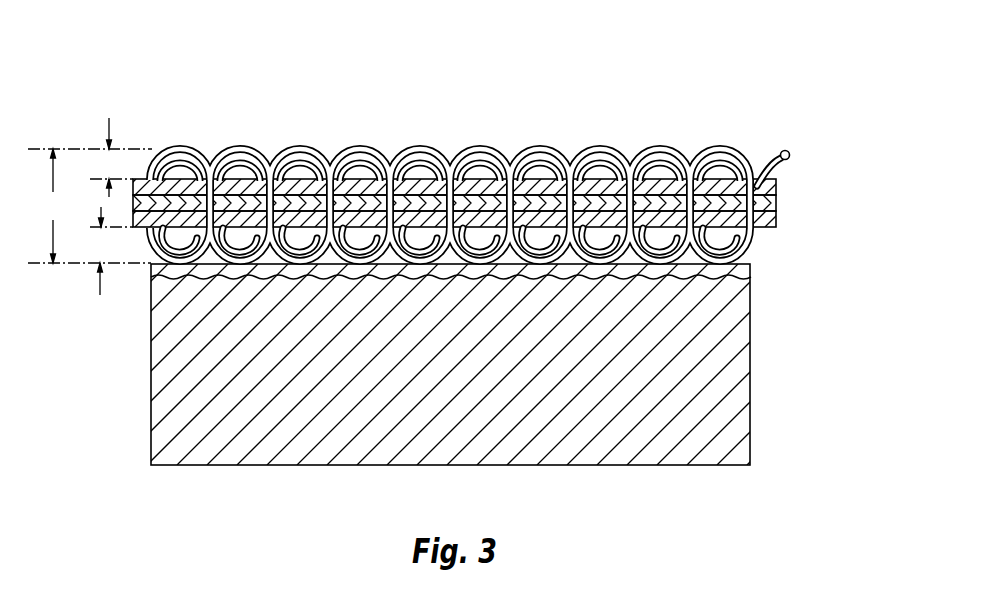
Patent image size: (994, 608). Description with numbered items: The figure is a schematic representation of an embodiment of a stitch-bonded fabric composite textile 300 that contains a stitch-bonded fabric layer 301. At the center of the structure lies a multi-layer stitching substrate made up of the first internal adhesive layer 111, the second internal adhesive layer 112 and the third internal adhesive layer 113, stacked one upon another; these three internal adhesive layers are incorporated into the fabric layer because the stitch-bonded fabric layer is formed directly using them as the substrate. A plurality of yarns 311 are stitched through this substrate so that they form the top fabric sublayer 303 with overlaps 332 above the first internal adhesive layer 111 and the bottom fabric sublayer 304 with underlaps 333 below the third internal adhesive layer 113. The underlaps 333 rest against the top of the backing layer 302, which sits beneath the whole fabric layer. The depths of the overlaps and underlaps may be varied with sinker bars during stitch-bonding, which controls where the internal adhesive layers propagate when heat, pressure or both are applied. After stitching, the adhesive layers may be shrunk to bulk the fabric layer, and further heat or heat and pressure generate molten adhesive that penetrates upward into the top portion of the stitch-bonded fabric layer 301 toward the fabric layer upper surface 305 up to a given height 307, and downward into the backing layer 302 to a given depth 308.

The stitch-bonded fabric composite textile 300 is at (474, 275).
The stitch-bonded fabric layer 301 is at (90, 206).
The backing layer 302 is at (151, 397).
The top fabric sublayer 303 is at (122, 122).
The bottom fabric sublayer 304 is at (113, 288).
The fabric layer upper surface 305 is at (485, 218).
The given height 307 is at (597, 165).
The given depth 308 is at (561, 280).
The yarns 311 is at (542, 146).
The overlaps 332 is at (247, 146).
The underlaps 333 is at (672, 262).
The first internal adhesive layer 111 is at (777, 188).
The second internal adhesive layer 112 is at (777, 204).
The third internal adhesive layer 113 is at (777, 220).